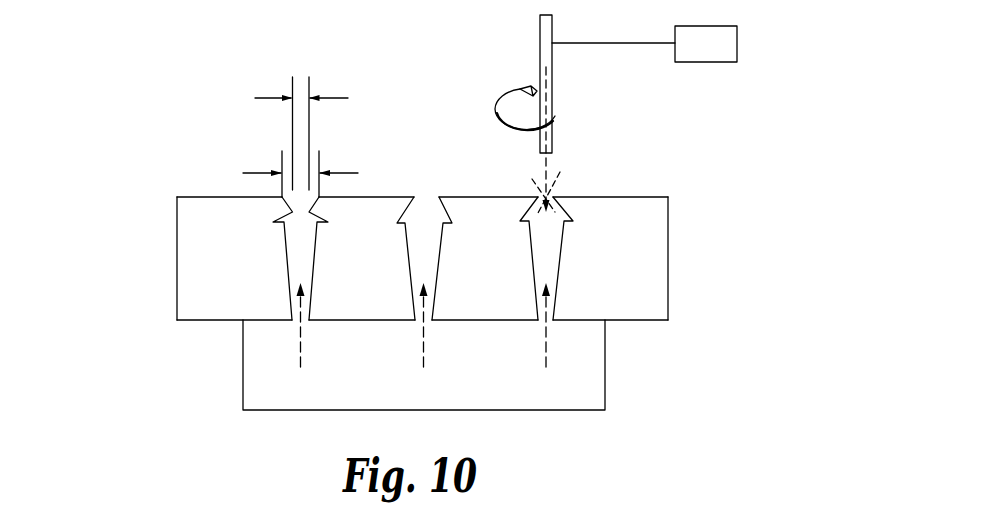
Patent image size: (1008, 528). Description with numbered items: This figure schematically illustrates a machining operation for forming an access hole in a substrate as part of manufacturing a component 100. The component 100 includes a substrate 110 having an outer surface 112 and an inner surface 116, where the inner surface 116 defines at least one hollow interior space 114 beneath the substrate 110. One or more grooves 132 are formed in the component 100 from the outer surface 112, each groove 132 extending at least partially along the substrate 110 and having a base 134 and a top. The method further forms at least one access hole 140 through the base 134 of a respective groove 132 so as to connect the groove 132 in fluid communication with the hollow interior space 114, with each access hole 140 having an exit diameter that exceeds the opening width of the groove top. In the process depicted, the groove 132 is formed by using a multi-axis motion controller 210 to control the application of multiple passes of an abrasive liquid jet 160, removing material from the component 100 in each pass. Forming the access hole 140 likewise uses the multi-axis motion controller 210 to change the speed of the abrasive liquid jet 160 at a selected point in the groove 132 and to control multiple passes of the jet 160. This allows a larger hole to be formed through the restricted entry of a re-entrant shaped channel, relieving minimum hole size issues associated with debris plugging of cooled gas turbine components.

The component 100 is at (78, 241).
The substrate 110 is at (652, 267).
The outer surface 112 is at (187, 192).
The hollow interior space 114 is at (583, 362).
The inner surface 116 is at (205, 320).
The groove 132 is at (428, 213).
The base 134 is at (575, 228).
The access hole 140 is at (288, 265).
The abrasive liquid jet 160 is at (540, 28).
The multi-axis motion controller 210 is at (644, 44).